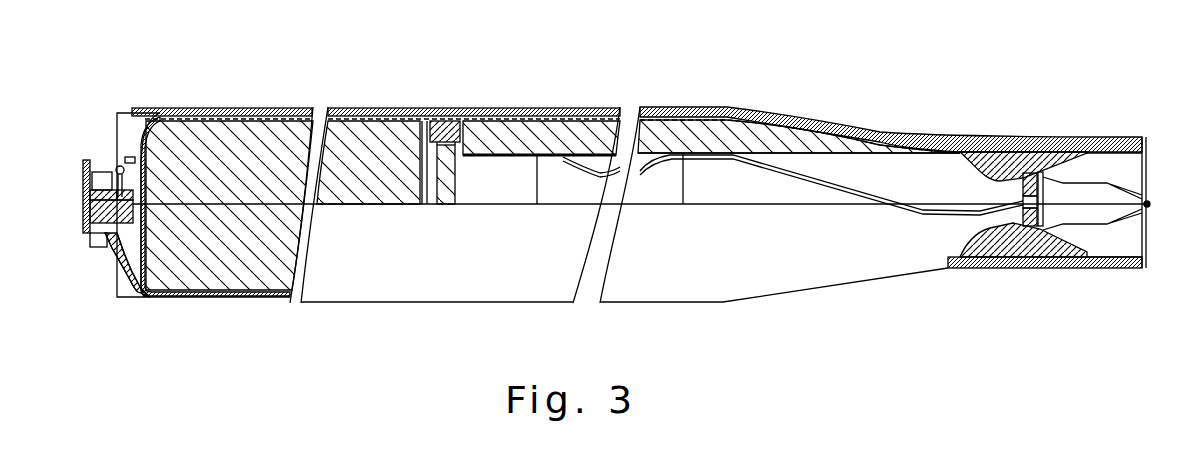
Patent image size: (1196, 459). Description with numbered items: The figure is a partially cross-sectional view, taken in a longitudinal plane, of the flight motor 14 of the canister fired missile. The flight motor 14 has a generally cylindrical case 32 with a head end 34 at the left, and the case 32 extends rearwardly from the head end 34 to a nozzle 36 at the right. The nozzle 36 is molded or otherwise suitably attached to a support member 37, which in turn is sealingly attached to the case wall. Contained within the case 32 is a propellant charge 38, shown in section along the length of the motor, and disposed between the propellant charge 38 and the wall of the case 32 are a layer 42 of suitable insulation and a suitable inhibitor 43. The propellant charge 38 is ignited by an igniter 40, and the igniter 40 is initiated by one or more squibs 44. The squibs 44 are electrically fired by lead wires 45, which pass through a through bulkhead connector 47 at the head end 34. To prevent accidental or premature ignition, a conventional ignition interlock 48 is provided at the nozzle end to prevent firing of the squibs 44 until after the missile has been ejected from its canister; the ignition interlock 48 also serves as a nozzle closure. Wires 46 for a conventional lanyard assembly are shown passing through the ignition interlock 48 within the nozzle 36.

The flight motor 14 is at (1026, 116).
The case 32 is at (752, 112).
The head end 34 is at (117, 135).
The nozzle 36 is at (1090, 153).
The support member 37 is at (1045, 138).
The propellant charge 38 is at (207, 150).
The igniter 40 is at (457, 190).
The layer of insulation 42 is at (825, 122).
The inhibitor 43 is at (143, 122).
The squibs 44 is at (447, 123).
The lead wires 45 is at (118, 167).
The lanyard assembly wires 46 is at (1110, 182).
The through bulkhead connector 47 is at (95, 215).
The ignition interlock 48 is at (1023, 180).